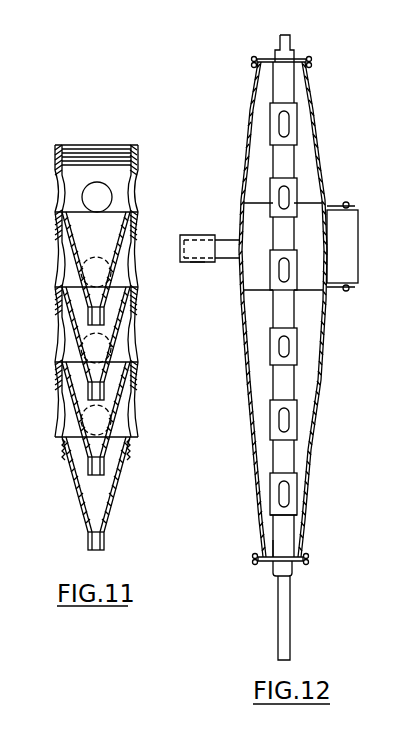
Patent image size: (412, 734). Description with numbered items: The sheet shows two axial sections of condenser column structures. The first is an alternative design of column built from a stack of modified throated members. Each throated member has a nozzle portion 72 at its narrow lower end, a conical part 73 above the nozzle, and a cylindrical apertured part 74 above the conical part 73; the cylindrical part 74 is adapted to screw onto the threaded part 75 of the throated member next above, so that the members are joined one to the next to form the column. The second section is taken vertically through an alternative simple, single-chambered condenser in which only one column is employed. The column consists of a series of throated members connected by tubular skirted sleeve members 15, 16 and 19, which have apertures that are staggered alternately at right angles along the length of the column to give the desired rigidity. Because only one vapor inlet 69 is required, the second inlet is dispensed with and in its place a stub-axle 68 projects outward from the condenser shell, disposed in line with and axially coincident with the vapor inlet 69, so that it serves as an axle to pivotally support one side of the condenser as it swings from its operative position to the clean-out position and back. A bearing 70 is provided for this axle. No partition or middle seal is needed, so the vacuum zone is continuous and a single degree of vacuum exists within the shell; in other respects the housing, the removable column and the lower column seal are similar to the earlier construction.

In FIG. 11, the cylindrical apertured part 74 is at (57, 169).
In FIG. 11, the conical part 73 is at (82, 263).
In FIG. 11, the nozzle portion 72 is at (86, 318).
In FIG. 11, the threaded part 75 is at (63, 452).
In FIG. 12, the tubular skirted sleeve member 15 is at (285, 84).
In FIG. 12, the tubular skirted sleeve member 16 is at (295, 252).
In FIG. 12, the stub-axle 68 is at (224, 238).
In FIG. 12, the bearing 70 is at (201, 265).
In FIG. 12, the vapor inlet 69 is at (345, 263).
In FIG. 12, the tubular skirted sleeve member 19 is at (292, 527).